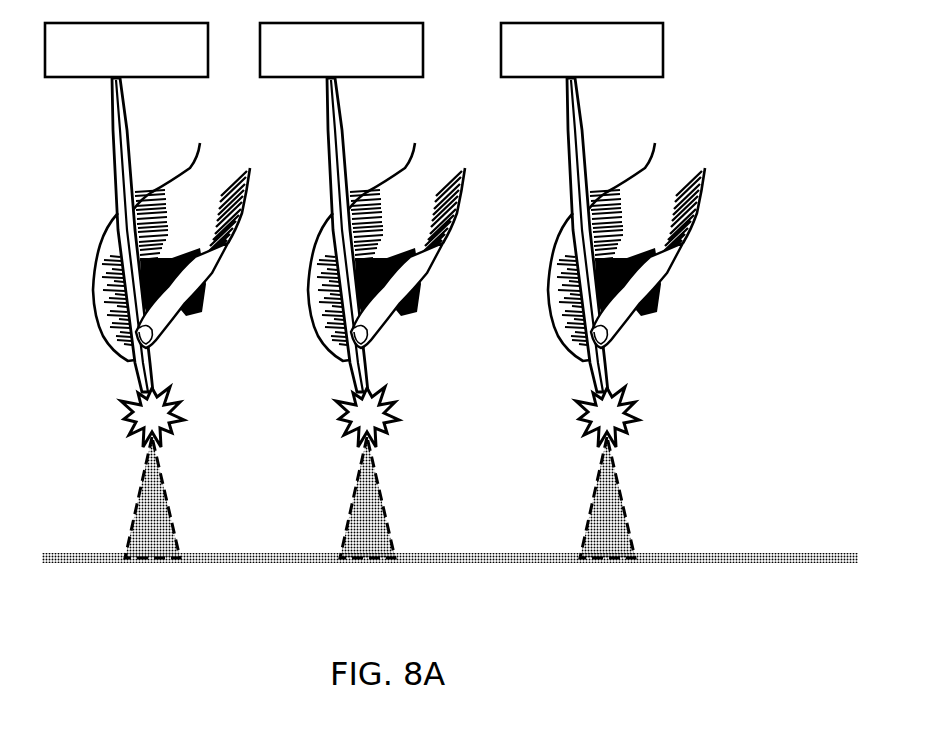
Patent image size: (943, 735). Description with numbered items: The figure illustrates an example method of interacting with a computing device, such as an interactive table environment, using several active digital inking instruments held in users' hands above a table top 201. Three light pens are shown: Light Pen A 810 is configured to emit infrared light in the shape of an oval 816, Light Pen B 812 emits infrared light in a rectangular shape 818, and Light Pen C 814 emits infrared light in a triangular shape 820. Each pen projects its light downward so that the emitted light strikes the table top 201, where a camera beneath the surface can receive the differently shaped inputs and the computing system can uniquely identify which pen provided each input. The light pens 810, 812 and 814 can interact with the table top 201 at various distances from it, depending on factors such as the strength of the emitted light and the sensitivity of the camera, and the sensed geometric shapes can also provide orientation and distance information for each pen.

The table top 201 is at (724, 556).
The Light Pen A 810 is at (156, 149).
The Light Pen B 812 is at (372, 132).
The Light Pen C 814 is at (666, 107).
The oval 816 is at (142, 560).
The rectangular shape 818 is at (360, 560).
The triangular shape 820 is at (611, 559).